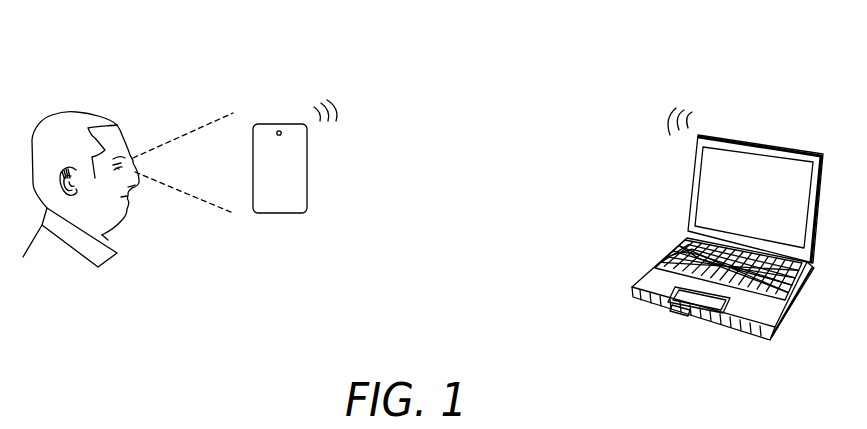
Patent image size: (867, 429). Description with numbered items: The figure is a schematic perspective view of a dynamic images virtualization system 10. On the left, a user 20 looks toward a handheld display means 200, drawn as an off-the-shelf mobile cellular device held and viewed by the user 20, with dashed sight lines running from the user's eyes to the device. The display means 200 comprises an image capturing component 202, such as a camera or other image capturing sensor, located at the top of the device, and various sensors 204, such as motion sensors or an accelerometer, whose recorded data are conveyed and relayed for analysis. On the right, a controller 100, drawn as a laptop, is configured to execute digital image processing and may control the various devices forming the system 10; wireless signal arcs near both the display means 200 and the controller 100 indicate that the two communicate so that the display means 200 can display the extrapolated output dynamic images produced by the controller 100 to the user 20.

The dynamic images virtualization system 10 is at (575, 100).
The user 20 is at (47, 113).
The controller 100 is at (790, 147).
The display means 200 is at (307, 163).
The image capturing component 202 is at (279, 128).
The sensors 204 is at (275, 183).